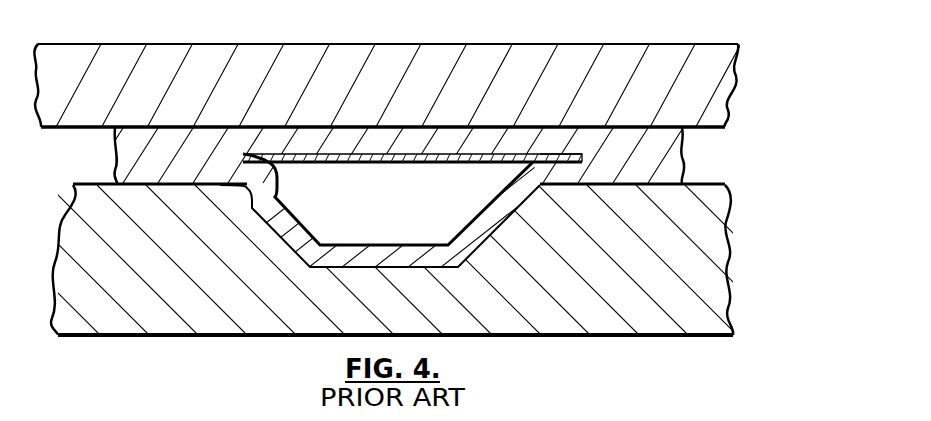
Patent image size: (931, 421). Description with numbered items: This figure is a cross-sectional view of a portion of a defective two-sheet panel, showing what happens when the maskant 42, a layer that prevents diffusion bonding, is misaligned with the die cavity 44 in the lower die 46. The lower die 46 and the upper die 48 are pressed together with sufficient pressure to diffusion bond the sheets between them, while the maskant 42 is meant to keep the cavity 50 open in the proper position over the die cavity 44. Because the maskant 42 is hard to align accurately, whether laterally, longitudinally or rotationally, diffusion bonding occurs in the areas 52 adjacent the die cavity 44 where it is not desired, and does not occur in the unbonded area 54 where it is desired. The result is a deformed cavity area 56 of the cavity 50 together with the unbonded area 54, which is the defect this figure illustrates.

The maskant 42 is at (430, 163).
The die cavity 44 is at (513, 207).
The lower die 46 is at (705, 232).
The upper die 48 is at (720, 78).
The cavity 50 is at (412, 199).
The areas adjacent the cavity 52 is at (207, 157).
The unbonded area 54 is at (562, 152).
The deformed cavity area 56 is at (308, 228).